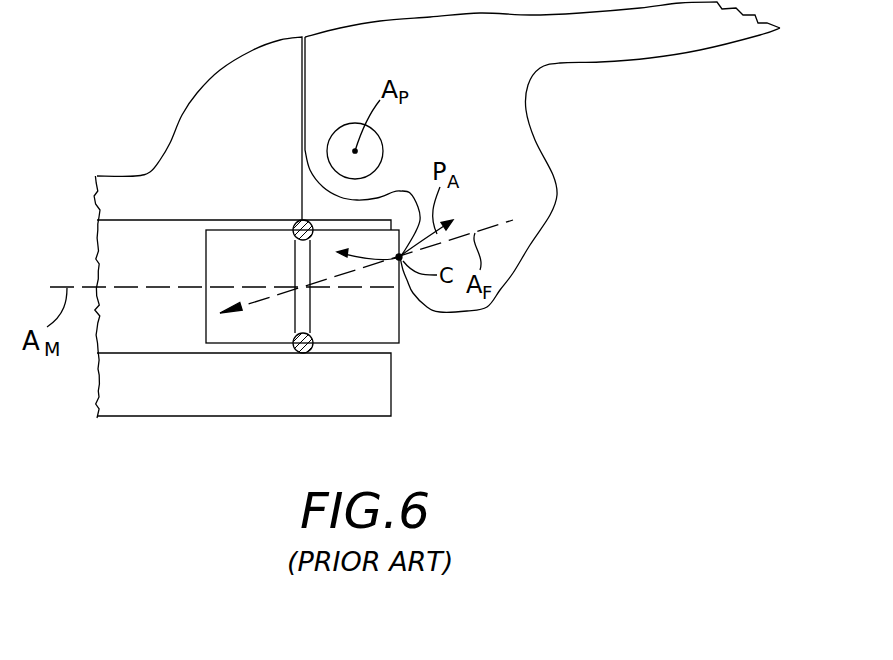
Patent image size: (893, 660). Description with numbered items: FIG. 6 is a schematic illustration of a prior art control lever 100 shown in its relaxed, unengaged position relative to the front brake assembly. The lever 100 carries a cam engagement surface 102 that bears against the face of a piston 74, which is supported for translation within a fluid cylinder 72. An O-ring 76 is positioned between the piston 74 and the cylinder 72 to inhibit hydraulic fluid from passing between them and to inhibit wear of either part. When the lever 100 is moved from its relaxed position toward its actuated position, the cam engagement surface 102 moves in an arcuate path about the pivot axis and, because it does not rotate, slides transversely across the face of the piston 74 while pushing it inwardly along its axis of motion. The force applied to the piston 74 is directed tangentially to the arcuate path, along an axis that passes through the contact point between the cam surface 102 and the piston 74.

The prior art lever 100 is at (637, 62).
The cam engagement surface 102 is at (427, 313).
The fluid cylinder 72 is at (122, 353).
The piston 74 is at (403, 330).
The O-ring 76 is at (303, 353).